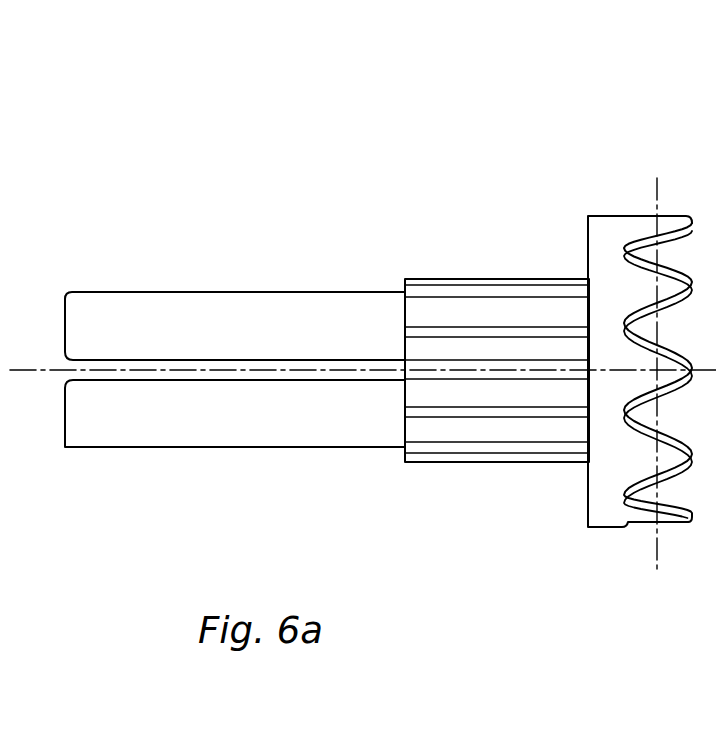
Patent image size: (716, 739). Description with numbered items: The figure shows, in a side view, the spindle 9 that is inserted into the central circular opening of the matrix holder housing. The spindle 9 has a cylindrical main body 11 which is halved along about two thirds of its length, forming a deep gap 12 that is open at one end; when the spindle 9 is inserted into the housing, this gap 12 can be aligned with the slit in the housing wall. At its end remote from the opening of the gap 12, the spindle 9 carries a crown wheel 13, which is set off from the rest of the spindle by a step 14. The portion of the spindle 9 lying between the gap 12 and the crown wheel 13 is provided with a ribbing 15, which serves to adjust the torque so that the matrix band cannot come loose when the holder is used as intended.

The spindle 9 is at (392, 478).
The cylindrical main body 11 is at (221, 447).
The gap 12 is at (147, 365).
The crown wheel 13 is at (623, 224).
The step 14 is at (588, 255).
The ribbing 15 is at (441, 332).